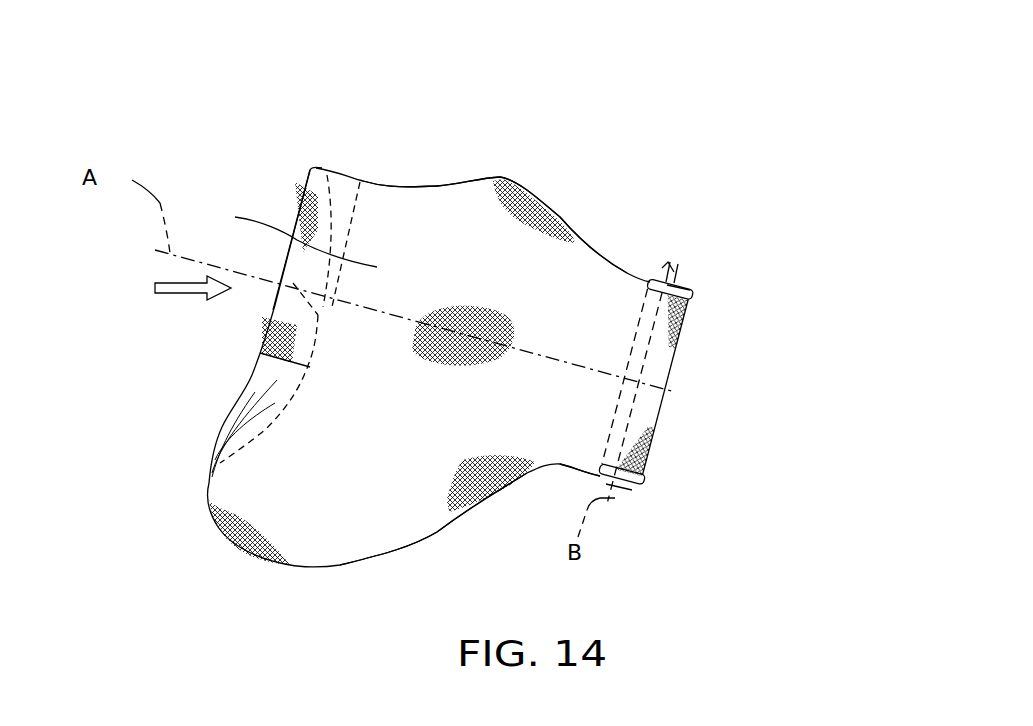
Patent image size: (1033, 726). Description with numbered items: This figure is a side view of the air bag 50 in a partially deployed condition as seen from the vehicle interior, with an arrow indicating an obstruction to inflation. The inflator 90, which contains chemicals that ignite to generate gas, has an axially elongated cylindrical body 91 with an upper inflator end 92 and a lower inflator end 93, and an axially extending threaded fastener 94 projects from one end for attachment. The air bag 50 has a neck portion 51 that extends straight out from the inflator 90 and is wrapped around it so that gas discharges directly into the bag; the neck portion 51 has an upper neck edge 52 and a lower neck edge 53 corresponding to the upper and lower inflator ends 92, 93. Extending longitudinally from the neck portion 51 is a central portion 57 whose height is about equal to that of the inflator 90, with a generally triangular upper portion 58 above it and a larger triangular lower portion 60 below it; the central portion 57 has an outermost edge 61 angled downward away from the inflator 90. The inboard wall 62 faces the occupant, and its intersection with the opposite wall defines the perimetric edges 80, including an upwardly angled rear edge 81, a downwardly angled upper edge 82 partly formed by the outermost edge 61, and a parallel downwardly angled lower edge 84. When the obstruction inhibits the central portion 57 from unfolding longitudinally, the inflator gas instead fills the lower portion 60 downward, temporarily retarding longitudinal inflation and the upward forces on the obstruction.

The air bag 50 is at (442, 142).
The neck portion 51 is at (587, 390).
The upper neck edge 52 is at (647, 277).
The lower neck edge 53 is at (583, 468).
The central portion 57 is at (291, 236).
The upper portion 58 is at (507, 177).
The lower portion 60 is at (350, 545).
The outermost edge 61 is at (387, 185).
The inboard wall 62 is at (509, 419).
The perimetric edges 80 is at (430, 182).
The rear edge 81 is at (560, 213).
The upper edge 82 is at (467, 177).
The lower edge 84 is at (437, 532).
The inflator 90 is at (658, 270).
The cylindrical body 91 is at (690, 288).
The upper inflator end 92 is at (668, 280).
The lower inflator end 93 is at (627, 487).
The threaded fastener 94 is at (680, 267).